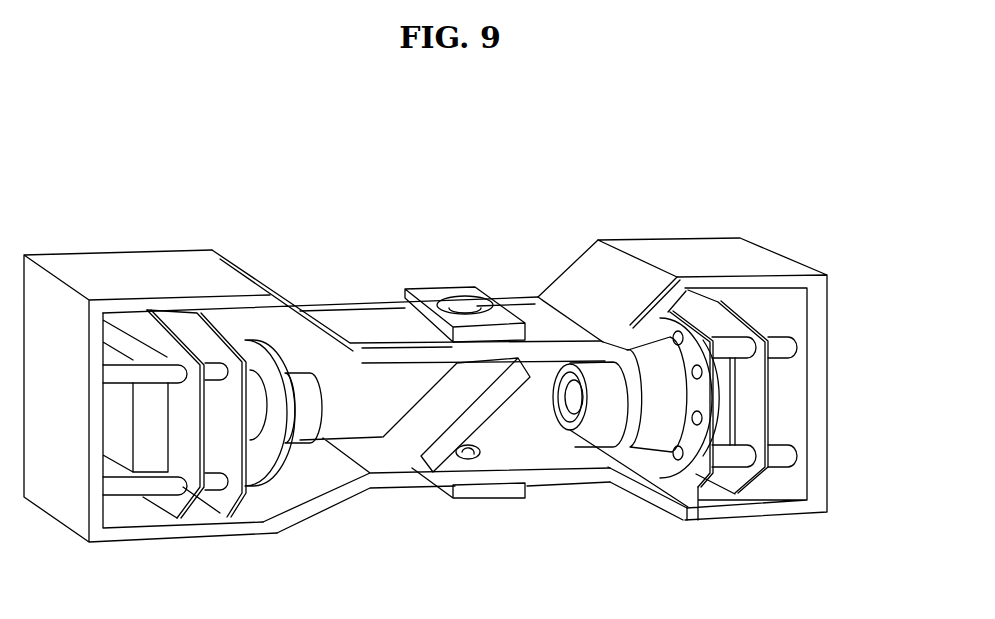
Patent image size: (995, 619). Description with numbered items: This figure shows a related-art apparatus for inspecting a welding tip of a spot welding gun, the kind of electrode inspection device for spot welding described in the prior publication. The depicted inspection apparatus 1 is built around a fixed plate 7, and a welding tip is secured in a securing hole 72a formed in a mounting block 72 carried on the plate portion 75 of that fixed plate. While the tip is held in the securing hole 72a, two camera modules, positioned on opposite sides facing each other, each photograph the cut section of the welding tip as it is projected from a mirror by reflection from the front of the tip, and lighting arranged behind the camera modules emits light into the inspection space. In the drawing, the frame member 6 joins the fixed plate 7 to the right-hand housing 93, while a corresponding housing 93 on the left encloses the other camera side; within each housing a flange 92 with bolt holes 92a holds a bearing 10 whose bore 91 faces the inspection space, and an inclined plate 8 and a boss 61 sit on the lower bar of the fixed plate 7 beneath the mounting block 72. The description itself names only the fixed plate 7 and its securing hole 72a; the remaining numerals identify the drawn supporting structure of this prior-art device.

The assembly 1 is at (732, 182).
The connecting tab 6 is at (698, 228).
The fixed plate 7 is at (339, 300).
The support plate 8 is at (423, 450).
The bearing 10 is at (260, 357).
The boss 61 is at (470, 460).
The mounting block 72 is at (443, 290).
The securing hole 72a is at (478, 300).
The top plate 75 is at (388, 316).
The bearing bore 91 is at (300, 435).
The flange 92 is at (198, 332).
The flange bolt hole 92a is at (684, 340).
The housing 93 is at (150, 328).